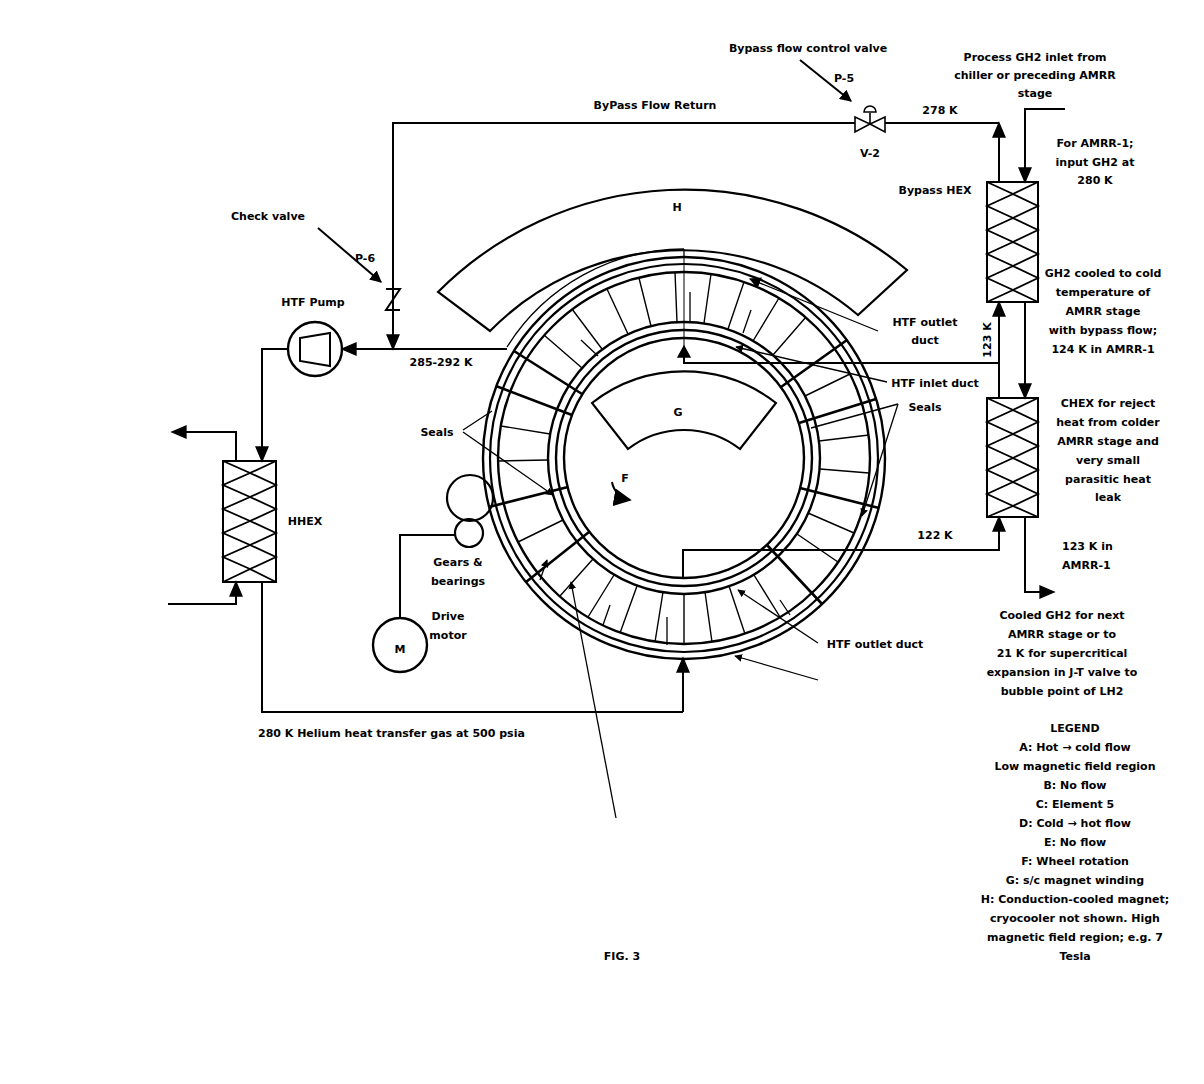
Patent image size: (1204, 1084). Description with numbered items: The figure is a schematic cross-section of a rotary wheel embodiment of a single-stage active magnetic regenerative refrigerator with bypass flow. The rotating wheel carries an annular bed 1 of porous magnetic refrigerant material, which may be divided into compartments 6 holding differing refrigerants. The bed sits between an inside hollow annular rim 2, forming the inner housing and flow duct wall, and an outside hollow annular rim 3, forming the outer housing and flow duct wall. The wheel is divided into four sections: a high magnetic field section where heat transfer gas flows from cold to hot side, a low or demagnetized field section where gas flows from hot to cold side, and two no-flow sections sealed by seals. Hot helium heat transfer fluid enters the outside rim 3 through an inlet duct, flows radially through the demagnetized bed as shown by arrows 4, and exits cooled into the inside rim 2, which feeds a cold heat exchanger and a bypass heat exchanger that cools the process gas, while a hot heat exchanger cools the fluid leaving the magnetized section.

The annular bed 1 is at (580, 567).
The inside hollow annular rim 2 is at (793, 521).
The outside hollow annular rim 3 is at (490, 400).
The arrows 4 is at (675, 650).
The compartments 6 is at (539, 551).